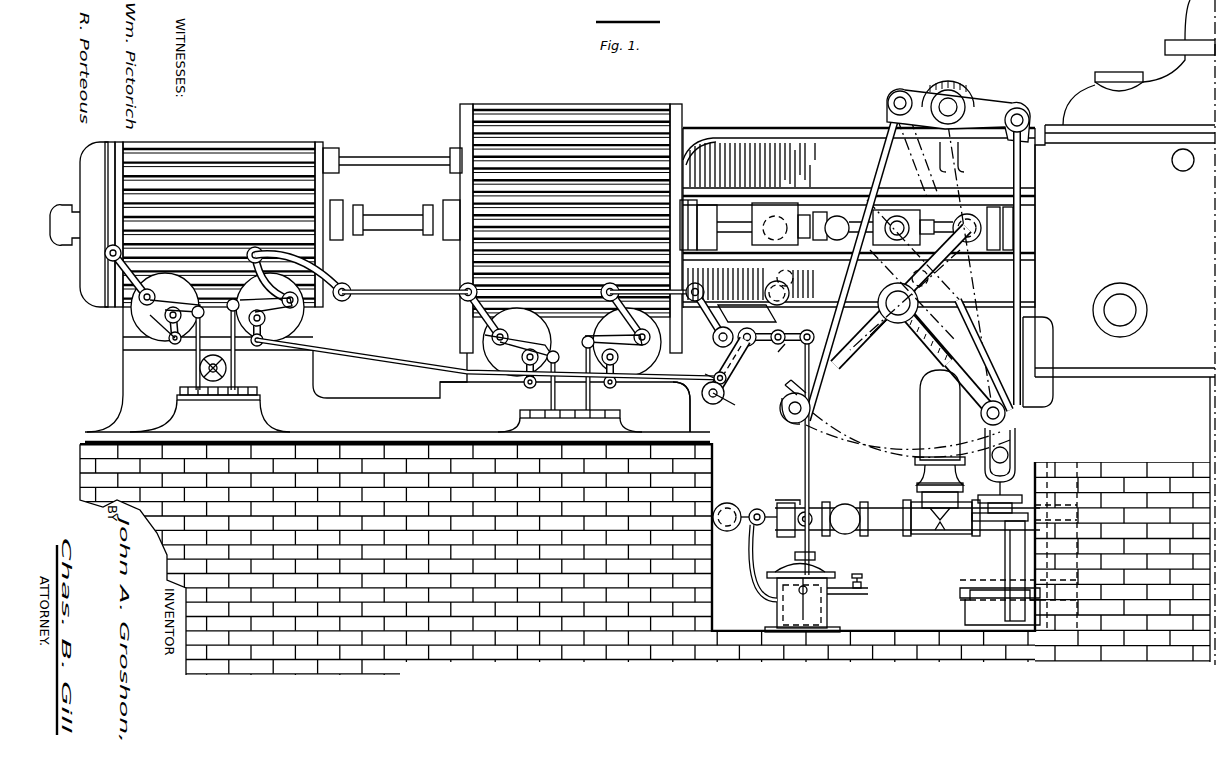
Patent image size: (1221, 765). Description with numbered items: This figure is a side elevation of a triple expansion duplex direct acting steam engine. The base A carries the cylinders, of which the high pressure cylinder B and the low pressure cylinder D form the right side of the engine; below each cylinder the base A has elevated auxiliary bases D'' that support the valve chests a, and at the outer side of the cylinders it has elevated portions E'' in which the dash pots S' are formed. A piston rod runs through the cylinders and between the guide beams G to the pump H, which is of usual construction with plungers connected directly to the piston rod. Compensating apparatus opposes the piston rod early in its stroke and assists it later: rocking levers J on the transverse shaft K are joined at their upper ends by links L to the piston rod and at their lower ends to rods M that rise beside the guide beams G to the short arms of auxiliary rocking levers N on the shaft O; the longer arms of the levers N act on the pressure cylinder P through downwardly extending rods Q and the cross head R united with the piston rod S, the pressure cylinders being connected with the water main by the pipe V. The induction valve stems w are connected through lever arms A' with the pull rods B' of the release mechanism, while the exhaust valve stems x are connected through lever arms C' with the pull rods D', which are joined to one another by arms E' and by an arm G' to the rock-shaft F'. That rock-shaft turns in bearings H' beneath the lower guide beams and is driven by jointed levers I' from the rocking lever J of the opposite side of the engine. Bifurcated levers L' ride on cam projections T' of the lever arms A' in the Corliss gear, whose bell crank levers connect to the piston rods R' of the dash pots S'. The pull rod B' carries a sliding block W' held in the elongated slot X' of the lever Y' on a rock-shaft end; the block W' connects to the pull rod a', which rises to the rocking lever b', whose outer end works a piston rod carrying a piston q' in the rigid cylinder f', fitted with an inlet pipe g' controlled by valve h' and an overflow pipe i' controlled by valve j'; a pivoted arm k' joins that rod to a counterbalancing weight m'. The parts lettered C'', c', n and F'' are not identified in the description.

The base A is at (647, 497).
The high pressure cylinder B is at (186, 215).
The low pressure cylinder D is at (571, 219).
The rock-shaft F' is at (392, 194).
The valve chests a is at (396, 324).
The lever arms C' is at (203, 275).
The crank C'' is at (544, 310).
The arms E' is at (306, 277).
The pull rods D' is at (442, 266).
The exhaust valve stems x is at (398, 322).
The induction valve stems w is at (400, 347).
The links L is at (396, 316).
The piston rods of dash pots R' is at (391, 354).
The dash pots S' is at (398, 386).
The elevated portions E'' is at (386, 416).
The lever arms A' is at (223, 341).
The pull rods B' is at (488, 359).
The auxiliary bases D'' is at (502, 397).
The guide beams G is at (859, 218).
The arms G' is at (704, 310).
The jointed levers I' is at (750, 286).
The bifurcated levers L' is at (816, 225).
The rocking levers J is at (924, 310).
The transverse shaft K is at (921, 265).
The rods M is at (983, 332).
The shaft O is at (958, 111).
The auxiliary rocking levers N is at (1016, 252).
The downwardly extending rods Q is at (1038, 362).
The cross head R is at (988, 441).
The piston rod S is at (1000, 496).
The pressure cylinder P is at (1018, 546).
The cam projections T' is at (907, 453).
The pipe V is at (793, 511).
The pivoted arm k' is at (759, 506).
The weight m' is at (727, 527).
The rod c' is at (815, 456).
The sliding block W' is at (779, 400).
The link bar n is at (763, 329).
The bearings H' is at (747, 313).
The pull rod a' is at (722, 366).
The rocking lever b' is at (785, 353).
The pin F'' is at (700, 358).
The levers Y' is at (710, 398).
The elongated slots X' is at (736, 404).
The pump H is at (1125, 332).
The outlet or overflow pipe i' is at (801, 590).
The controlling valve j' is at (801, 605).
The rigid cylinder f' is at (807, 619).
The inlet pipe g' is at (859, 587).
The valve h' is at (856, 573).
The piston q' is at (764, 569).